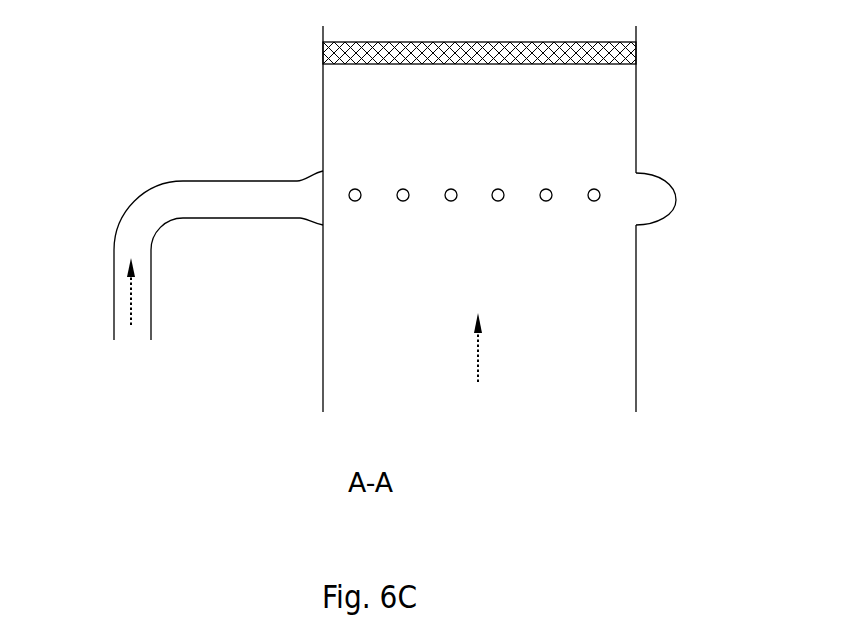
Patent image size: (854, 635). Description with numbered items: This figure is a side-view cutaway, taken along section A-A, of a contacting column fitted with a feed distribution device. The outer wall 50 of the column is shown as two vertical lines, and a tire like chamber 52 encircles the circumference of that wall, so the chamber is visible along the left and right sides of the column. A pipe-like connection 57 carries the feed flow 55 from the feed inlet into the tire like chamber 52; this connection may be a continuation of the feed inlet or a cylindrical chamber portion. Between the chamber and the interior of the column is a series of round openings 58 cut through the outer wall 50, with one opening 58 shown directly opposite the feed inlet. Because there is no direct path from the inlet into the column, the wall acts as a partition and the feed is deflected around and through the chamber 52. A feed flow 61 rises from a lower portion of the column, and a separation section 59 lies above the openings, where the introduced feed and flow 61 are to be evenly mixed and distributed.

The outer wall 50 is at (637, 380).
The tire like chamber 52 is at (316, 222).
The feed flow 55 is at (132, 297).
The pipe-like connection 57 is at (150, 200).
The openings 58 is at (357, 187).
The separation section 59 is at (627, 53).
The feed flow 61 is at (498, 347).